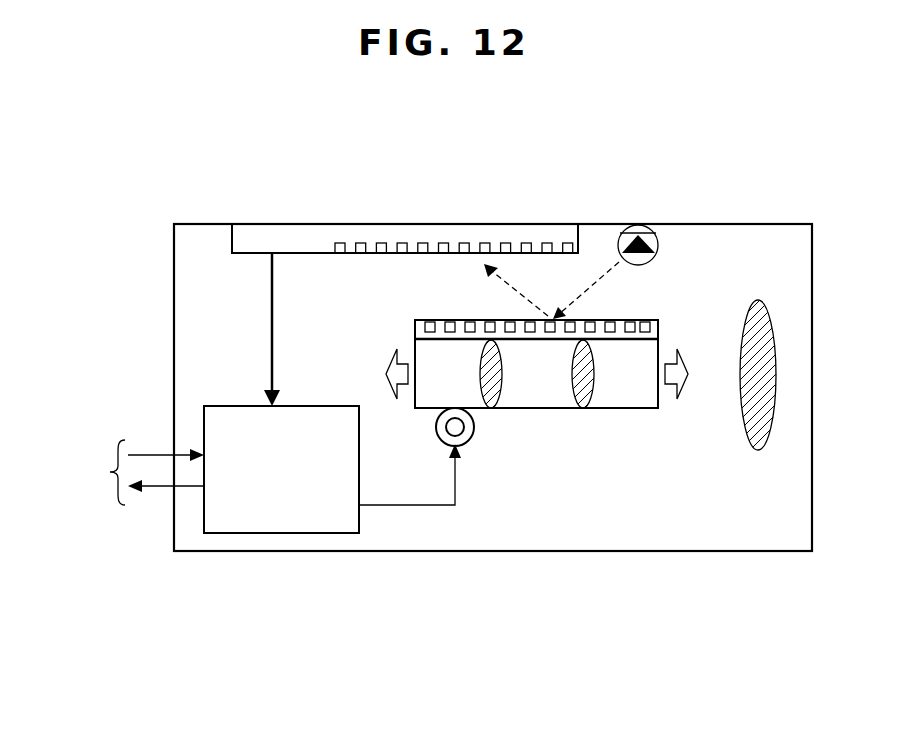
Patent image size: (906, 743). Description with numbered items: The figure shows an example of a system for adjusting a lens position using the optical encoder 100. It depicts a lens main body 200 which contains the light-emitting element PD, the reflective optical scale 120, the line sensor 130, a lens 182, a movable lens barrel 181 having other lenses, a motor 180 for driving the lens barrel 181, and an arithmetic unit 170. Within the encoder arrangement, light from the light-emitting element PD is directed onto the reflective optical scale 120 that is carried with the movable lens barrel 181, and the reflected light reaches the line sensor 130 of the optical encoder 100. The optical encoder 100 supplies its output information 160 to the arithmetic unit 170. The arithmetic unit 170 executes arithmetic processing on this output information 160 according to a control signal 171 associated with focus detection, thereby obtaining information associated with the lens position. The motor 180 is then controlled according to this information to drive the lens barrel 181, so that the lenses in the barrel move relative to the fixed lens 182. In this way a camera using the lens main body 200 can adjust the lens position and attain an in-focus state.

The lens main body 200 is at (284, 132).
The optical encoder 100 is at (458, 223).
The line sensor 130 is at (370, 255).
The light-emitting element PD is at (652, 226).
The output information 160 is at (270, 318).
The reflective optical scale 120 is at (414, 328).
The movable lens barrel 181 is at (640, 410).
The motor 180 is at (473, 434).
The lens 182 is at (757, 450).
The arithmetic unit 170 is at (243, 534).
The control signal 171 is at (135, 472).